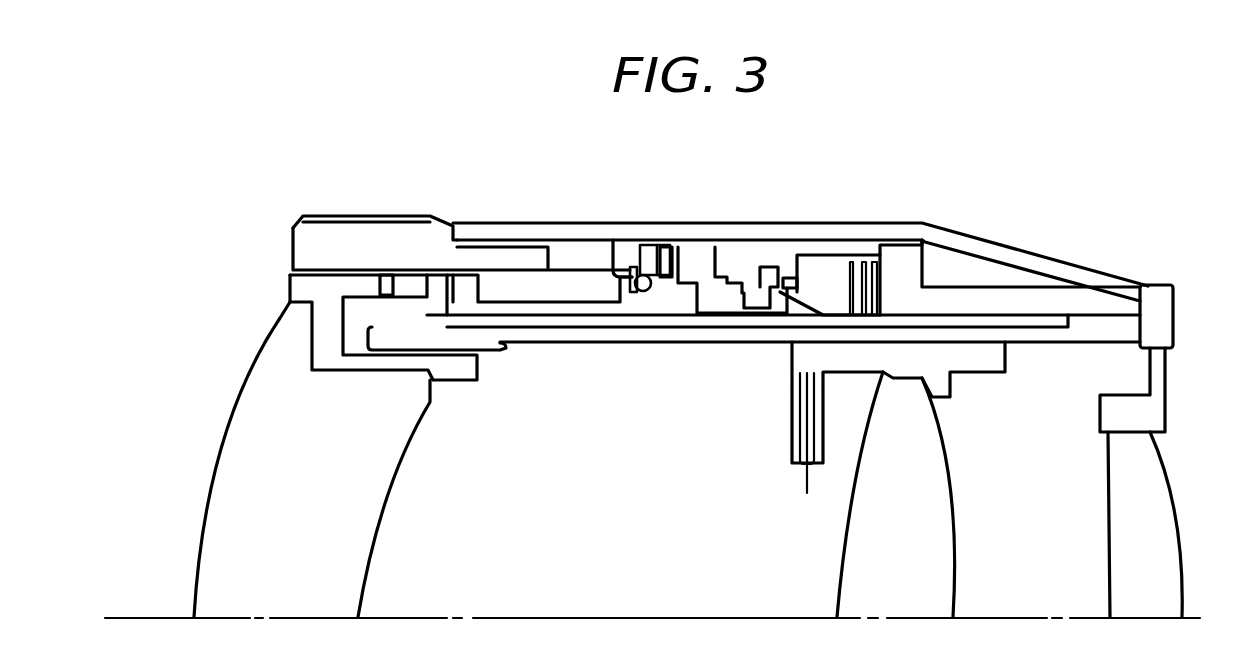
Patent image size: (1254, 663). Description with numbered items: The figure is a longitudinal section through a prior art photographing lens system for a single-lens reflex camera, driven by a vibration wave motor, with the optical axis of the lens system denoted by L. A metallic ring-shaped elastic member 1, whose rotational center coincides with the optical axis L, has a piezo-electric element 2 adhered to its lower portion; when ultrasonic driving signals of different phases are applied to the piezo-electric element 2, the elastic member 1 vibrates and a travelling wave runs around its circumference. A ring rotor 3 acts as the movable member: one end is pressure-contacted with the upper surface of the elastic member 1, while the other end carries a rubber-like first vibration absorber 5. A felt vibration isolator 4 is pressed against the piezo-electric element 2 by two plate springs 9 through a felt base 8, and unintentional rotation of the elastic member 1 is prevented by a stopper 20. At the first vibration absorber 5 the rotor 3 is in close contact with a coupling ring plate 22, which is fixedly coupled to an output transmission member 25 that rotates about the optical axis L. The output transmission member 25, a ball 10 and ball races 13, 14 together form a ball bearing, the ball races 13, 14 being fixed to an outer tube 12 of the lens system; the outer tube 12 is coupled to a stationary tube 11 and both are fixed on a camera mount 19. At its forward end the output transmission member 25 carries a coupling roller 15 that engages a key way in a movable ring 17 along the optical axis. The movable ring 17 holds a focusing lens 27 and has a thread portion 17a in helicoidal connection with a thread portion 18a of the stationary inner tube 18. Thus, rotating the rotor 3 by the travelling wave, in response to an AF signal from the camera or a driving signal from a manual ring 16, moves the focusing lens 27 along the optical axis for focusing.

The elastic member 1 is at (808, 272).
The piezo-electric element 2 is at (836, 272).
The ring rotor 3 is at (752, 272).
The vibration isolator 4 is at (870, 290).
The first vibration absorber 5 is at (738, 268).
The felt base 8 is at (860, 272).
The plate springs 9 is at (876, 305).
The ball 10 is at (598, 280).
The stationary tube 11 is at (1088, 300).
The outer tube 12 is at (1050, 268).
The ball race 13 is at (682, 270).
The ball race 14 is at (632, 268).
The coupling roller 15 is at (437, 290).
The manual ring 16 is at (420, 243).
The movable ring 17 is at (322, 293).
The thread portion 17a is at (420, 352).
The stationary inner tube 18 is at (1110, 325).
The thread portion 18a is at (488, 340).
The camera mount 19 is at (1165, 302).
The stopper 20 is at (782, 272).
The coupling ring plate 22 is at (712, 272).
The output transmission member 25 is at (657, 262).
The focusing lens 27 is at (263, 373).
The optical axis L is at (135, 618).